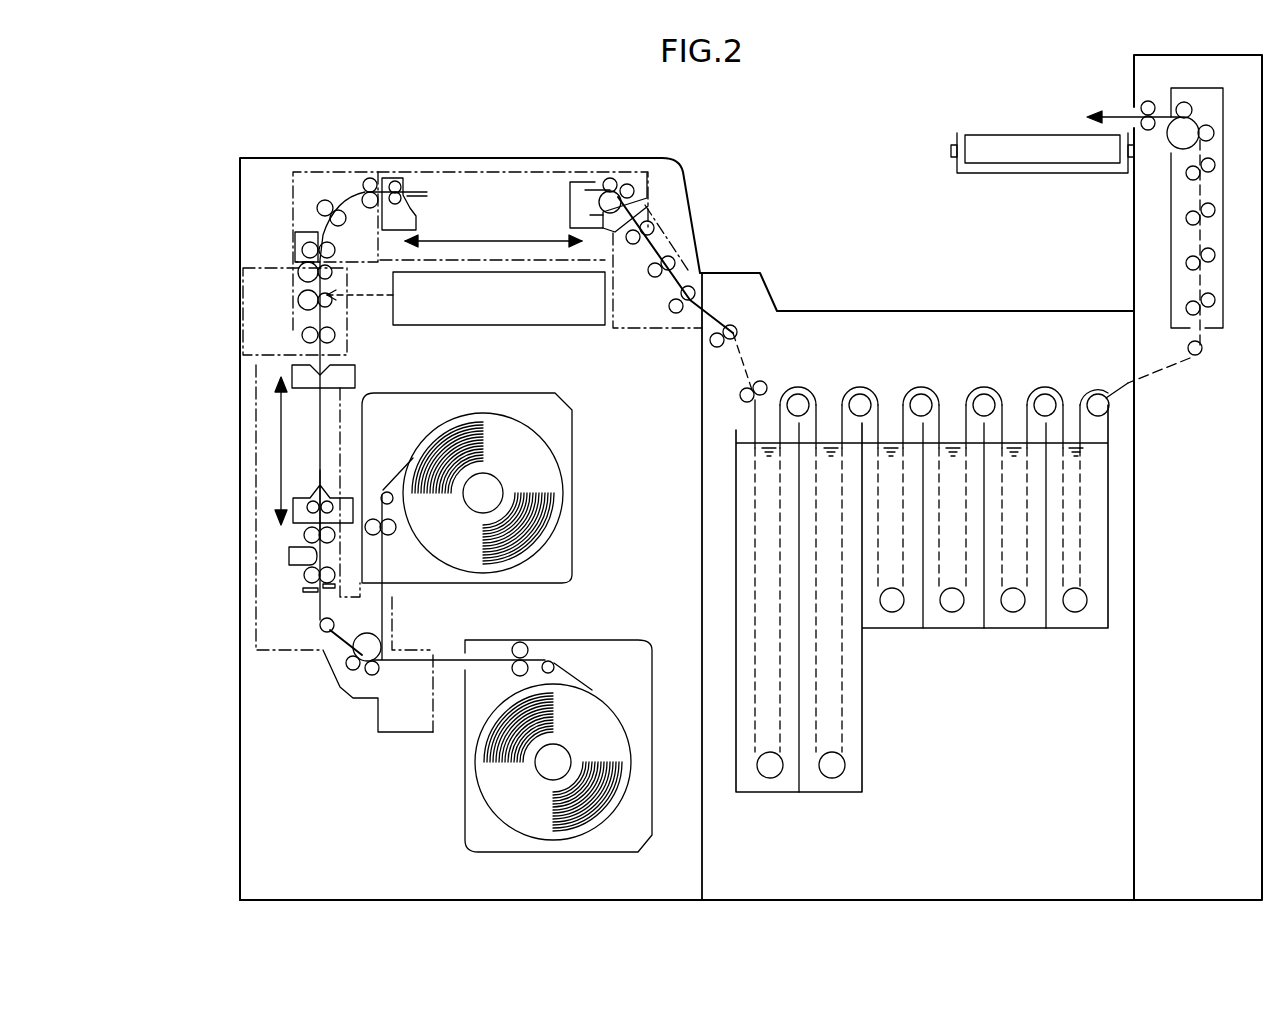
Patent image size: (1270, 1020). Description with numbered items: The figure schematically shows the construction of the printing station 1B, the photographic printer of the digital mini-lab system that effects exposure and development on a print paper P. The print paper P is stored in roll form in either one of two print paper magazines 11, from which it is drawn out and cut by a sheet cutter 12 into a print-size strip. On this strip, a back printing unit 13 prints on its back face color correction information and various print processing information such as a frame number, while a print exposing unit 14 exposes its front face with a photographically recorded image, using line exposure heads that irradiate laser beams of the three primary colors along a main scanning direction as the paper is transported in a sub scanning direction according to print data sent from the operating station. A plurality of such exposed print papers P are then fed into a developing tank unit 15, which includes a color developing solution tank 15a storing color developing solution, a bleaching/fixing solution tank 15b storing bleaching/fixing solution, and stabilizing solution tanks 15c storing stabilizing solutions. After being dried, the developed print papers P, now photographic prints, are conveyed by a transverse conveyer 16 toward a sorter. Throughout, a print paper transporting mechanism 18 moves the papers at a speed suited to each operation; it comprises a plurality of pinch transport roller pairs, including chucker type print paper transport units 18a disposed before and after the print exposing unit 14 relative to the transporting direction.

The printing station 1B is at (190, 152).
The print paper magazine 11 is at (575, 540).
The sheet cutter 12 is at (303, 591).
The back printing unit 13 is at (290, 553).
The print exposing unit 14 is at (530, 318).
The developing tank unit 15 is at (922, 624).
The color developing solution tank 15a is at (777, 785).
The bleaching/fixing solution tank 15b is at (850, 783).
The stabilizing solution tank 15c is at (1078, 618).
The transverse conveyer 16 is at (1005, 135).
The print paper transporting mechanism 18 is at (312, 208).
The chucker type print paper transport unit 18a is at (519, 170).
The print paper P is at (300, 240).